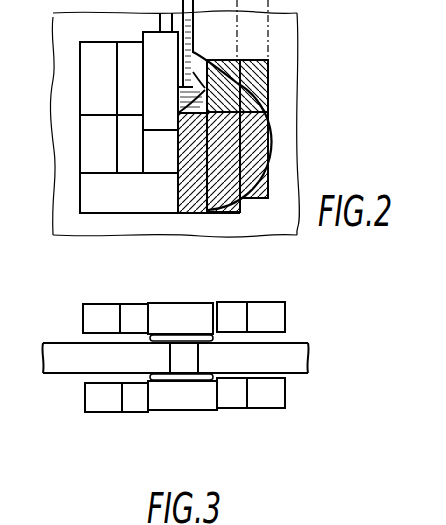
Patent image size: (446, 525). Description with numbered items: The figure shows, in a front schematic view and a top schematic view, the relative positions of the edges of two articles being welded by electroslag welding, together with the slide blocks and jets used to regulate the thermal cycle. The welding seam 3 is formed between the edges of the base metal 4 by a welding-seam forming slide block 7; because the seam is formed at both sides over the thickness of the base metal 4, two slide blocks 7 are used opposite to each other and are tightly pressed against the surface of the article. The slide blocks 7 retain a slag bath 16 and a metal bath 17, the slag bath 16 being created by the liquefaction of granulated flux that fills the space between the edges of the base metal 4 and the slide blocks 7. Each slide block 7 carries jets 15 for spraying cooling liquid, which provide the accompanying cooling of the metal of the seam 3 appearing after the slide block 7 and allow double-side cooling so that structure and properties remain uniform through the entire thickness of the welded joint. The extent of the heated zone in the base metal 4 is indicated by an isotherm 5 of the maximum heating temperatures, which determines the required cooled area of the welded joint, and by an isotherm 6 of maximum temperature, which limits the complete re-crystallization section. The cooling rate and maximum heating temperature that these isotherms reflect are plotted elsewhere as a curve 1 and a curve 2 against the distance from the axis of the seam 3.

In FIG. 2, the curve 1 is at (144, 86).
In FIG. 2, the curve 2 is at (190, 43).
In FIG. 2, the welding seam 3 is at (190, 203).
In FIG. 3, the welding seam 3 is at (180, 363).
In FIG. 2, the base metal 4 is at (65, 37).
In FIG. 3, the base metal 4 is at (300, 347).
In FIG. 2, the isotherm 5 is at (270, 87).
In FIG. 2, the isotherm 6 is at (252, 160).
In FIG. 2, the slide block 7 is at (140, 33).
In FIG. 3, the slide block 7 is at (210, 333).
In FIG. 2, the jets 15 is at (77, 72).
In FIG. 3, the jets 15 is at (165, 303).
In FIG. 2, the slag bath 16 is at (194, 51).
In FIG. 2, the metal bath 17 is at (178, 96).